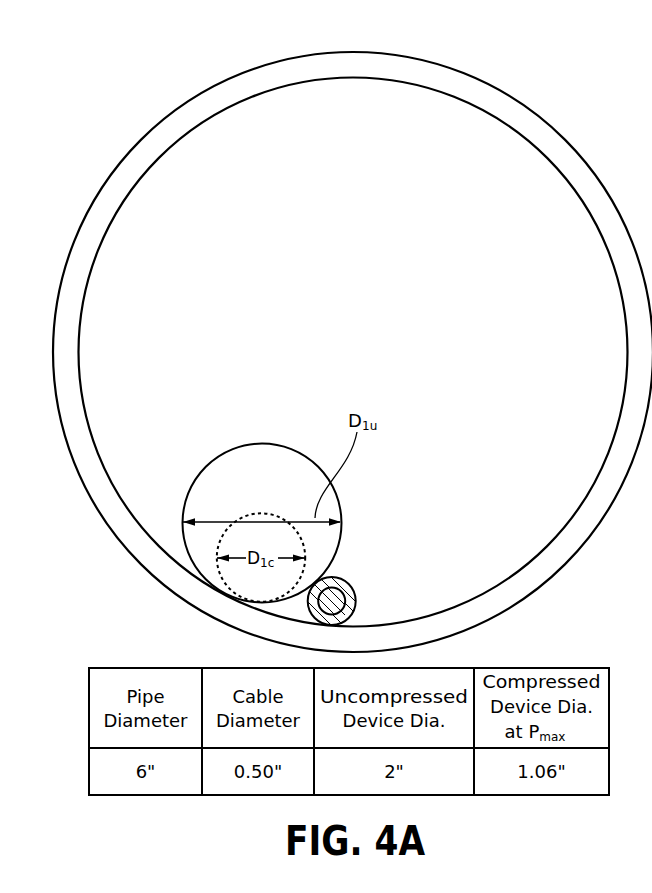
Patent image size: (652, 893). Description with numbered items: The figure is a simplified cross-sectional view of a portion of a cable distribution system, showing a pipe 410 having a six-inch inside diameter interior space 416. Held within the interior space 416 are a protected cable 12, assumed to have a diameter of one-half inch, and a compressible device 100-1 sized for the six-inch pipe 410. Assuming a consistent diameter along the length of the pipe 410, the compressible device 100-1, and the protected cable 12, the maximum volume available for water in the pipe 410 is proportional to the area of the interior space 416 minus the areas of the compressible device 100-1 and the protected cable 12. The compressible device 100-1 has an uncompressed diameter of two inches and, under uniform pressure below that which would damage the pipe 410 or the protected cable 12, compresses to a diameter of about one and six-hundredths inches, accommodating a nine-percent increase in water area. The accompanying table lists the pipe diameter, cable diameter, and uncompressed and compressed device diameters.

The pipe 410 is at (544, 138).
The interior space 416 is at (377, 211).
The compressible device 100-1 is at (217, 455).
The protected cable 12 is at (349, 583).